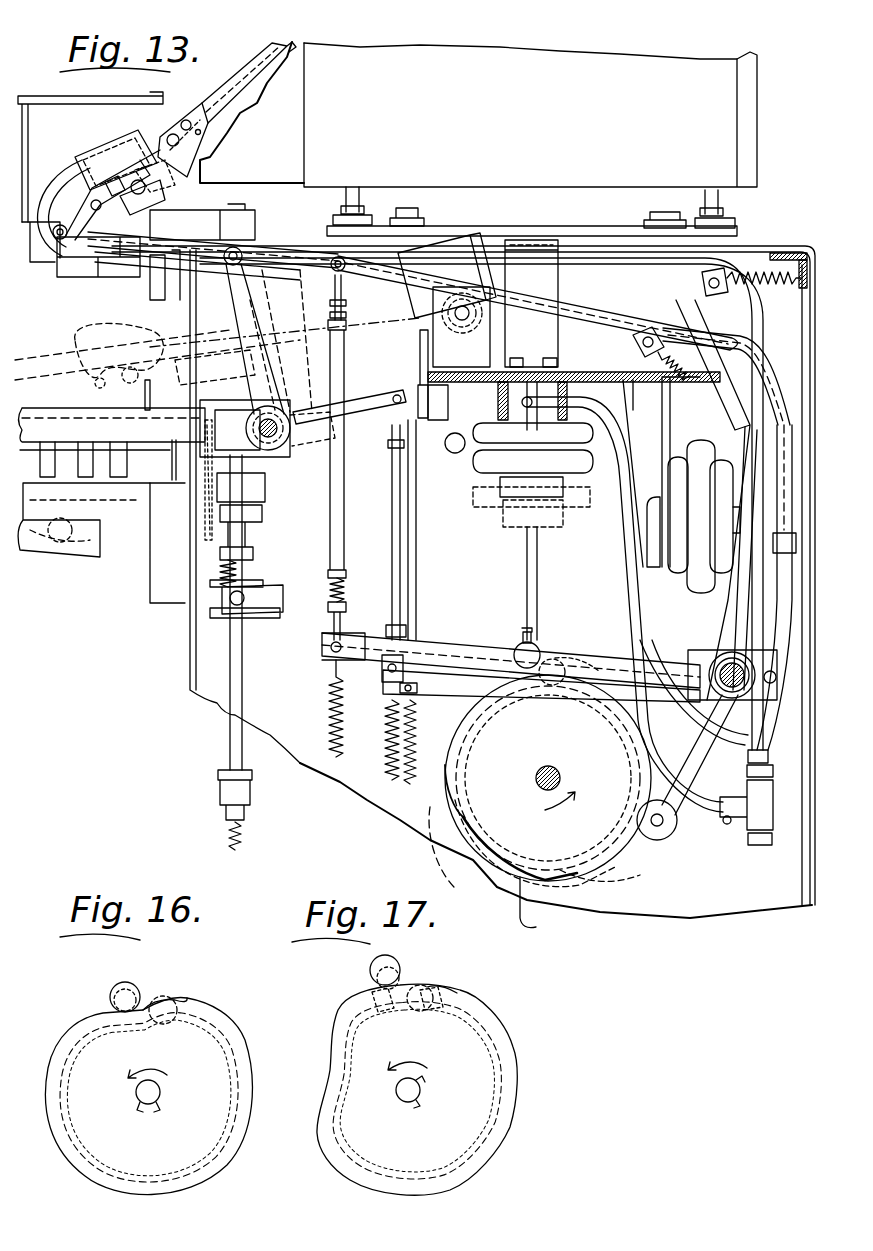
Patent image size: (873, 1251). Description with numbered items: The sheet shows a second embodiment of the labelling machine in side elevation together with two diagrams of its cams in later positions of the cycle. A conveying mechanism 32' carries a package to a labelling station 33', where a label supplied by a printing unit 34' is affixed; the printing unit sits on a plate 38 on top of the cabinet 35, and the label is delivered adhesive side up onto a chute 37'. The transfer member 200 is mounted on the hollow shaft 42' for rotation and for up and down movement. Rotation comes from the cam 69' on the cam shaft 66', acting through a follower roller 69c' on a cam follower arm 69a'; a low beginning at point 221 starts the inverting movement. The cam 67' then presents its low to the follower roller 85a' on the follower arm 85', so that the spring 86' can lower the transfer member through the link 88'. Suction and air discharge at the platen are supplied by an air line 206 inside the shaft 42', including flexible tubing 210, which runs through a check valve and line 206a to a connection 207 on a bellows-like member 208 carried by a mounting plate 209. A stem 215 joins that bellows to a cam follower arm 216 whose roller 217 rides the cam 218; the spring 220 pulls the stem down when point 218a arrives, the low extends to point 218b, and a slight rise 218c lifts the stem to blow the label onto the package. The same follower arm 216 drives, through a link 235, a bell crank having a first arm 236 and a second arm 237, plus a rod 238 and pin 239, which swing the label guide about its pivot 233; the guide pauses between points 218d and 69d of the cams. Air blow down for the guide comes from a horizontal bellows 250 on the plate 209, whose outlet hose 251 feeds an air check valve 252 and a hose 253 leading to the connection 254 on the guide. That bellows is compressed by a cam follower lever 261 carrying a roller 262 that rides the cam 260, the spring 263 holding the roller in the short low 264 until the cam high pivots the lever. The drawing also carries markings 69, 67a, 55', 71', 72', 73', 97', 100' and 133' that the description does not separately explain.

In FIG. 13, the conveying mechanism 32' is at (111, 520).
In FIG. 13, the labelling station 33' is at (157, 337).
In FIG. 13, the printing unit 34' is at (559, 115).
In FIG. 13, the cabinet 35 is at (746, 268).
In FIG. 13, the chute 37' is at (244, 94).
In FIG. 13, the plate 38 is at (742, 232).
In FIG. 13, the shaft 42' is at (216, 242).
In FIG. 13, the bracket 55' is at (38, 251).
In FIG. 13, the cam shaft 66' is at (574, 786).
In FIG. 16, the cam shaft 66' is at (168, 1088).
In FIG. 17, the cam shaft 66' is at (431, 1085).
In FIG. 13, the cam 67' is at (718, 732).
In FIG. 17, the cam lobe 67a is at (332, 1075).
In FIG. 16, the cam track 69 is at (149, 1097).
In FIG. 13, the cam 69' is at (540, 782).
In FIG. 13, the cam follower arm 69a' is at (541, 694).
In FIG. 13, the follower roller 69c' is at (576, 647).
In FIG. 16, the follower roller 69c' is at (181, 989).
In FIG. 17, the follower roller 69c' is at (420, 981).
In FIG. 17, the point 69d is at (355, 1034).
In FIG. 13, the spring 71' is at (401, 758).
In FIG. 13, the rod 72' is at (545, 485).
In FIG. 13, the block 73' is at (459, 402).
In FIG. 13, the follower arm 85' is at (511, 640).
In FIG. 13, the follower roller 85a' is at (504, 638).
In FIG. 16, the follower roller 85a' is at (133, 978).
In FIG. 17, the follower roller 85a' is at (407, 959).
In FIG. 13, the spring 86' is at (315, 708).
In FIG. 13, the link 88' is at (355, 457).
In FIG. 13, the shaft 97' is at (255, 652).
In FIG. 13, the block 100' is at (258, 586).
In FIG. 13, the pin 133' is at (167, 395).
In FIG. 13, the transfer member 200 is at (152, 178).
In FIG. 13, the air line 206 is at (738, 594).
In FIG. 13, the line 206a is at (528, 489).
In FIG. 13, the connection 207 is at (568, 400).
In FIG. 13, the bellows-like member 208 is at (600, 505).
In FIG. 13, the mounting plate 209 is at (604, 372).
In FIG. 13, the flexible tubing 210 is at (694, 330).
In FIG. 13, the stem 215 is at (540, 586).
In FIG. 13, the cam follower arm 216 is at (383, 690).
In FIG. 13, the follower roller 217 is at (590, 660).
In FIG. 16, the follower roller 217 is at (167, 997).
In FIG. 17, the follower roller 217 is at (430, 985).
In FIG. 13, the cam 218 is at (690, 778).
In FIG. 16, the cam 218 is at (233, 1170).
In FIG. 17, the cam 218 is at (500, 1060).
In FIG. 13, the point 218a is at (584, 884).
In FIG. 13, the point 218b is at (467, 792).
In FIG. 13, the slight rise 218c is at (480, 911).
In FIG. 17, the point 218d is at (360, 1037).
In FIG. 13, the spring 220 is at (393, 785).
In FIG. 13, the point 221 is at (578, 860).
In FIG. 13, the pivot 233 is at (55, 203).
In FIG. 13, the link 235 is at (392, 532).
In FIG. 13, the first arm 236 is at (365, 400).
In FIG. 13, the second arm 237 is at (258, 368).
In FIG. 13, the rod 238 is at (152, 295).
In FIG. 13, the pin 239 is at (64, 238).
In FIG. 13, the bellows 250 is at (660, 590).
In FIG. 13, the outlet hose 251 is at (655, 605).
In FIG. 13, the air check valve 252 is at (757, 820).
In FIG. 13, the hose 253 is at (668, 258).
In FIG. 13, the connection 254 is at (96, 158).
In FIG. 13, the cam 260 is at (618, 866).
In FIG. 13, the cam follower lever 261 is at (740, 748).
In FIG. 13, the cam follower roller 262 is at (676, 826).
In FIG. 13, the spring 263 is at (463, 575).
In FIG. 13, the low 264 is at (556, 840).